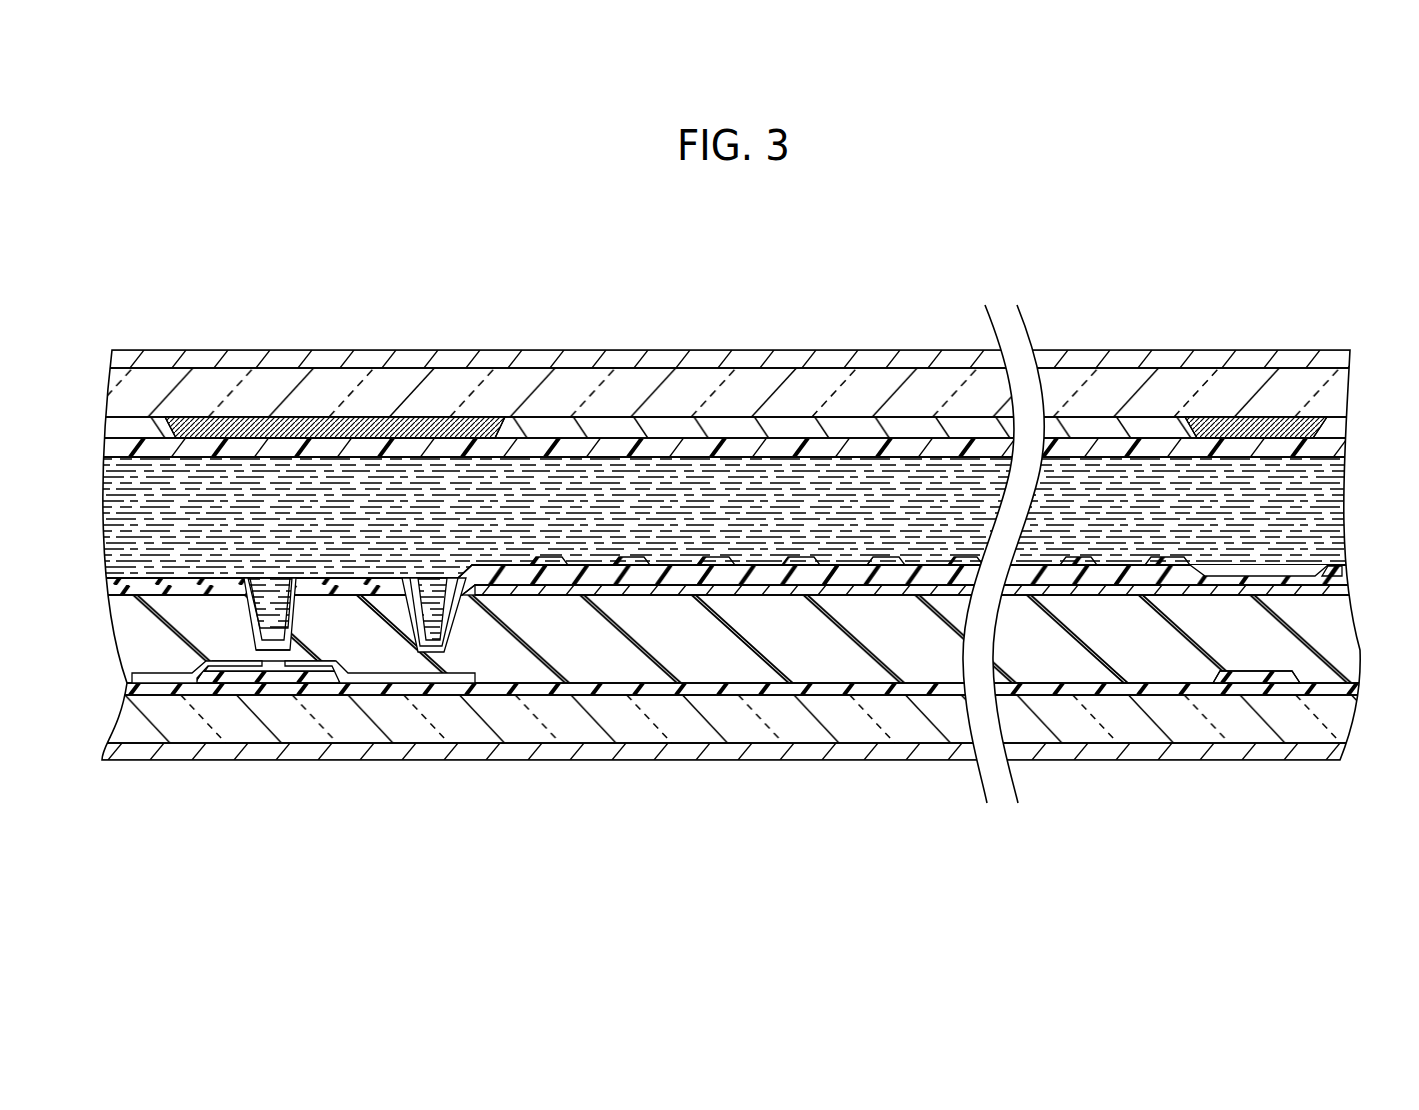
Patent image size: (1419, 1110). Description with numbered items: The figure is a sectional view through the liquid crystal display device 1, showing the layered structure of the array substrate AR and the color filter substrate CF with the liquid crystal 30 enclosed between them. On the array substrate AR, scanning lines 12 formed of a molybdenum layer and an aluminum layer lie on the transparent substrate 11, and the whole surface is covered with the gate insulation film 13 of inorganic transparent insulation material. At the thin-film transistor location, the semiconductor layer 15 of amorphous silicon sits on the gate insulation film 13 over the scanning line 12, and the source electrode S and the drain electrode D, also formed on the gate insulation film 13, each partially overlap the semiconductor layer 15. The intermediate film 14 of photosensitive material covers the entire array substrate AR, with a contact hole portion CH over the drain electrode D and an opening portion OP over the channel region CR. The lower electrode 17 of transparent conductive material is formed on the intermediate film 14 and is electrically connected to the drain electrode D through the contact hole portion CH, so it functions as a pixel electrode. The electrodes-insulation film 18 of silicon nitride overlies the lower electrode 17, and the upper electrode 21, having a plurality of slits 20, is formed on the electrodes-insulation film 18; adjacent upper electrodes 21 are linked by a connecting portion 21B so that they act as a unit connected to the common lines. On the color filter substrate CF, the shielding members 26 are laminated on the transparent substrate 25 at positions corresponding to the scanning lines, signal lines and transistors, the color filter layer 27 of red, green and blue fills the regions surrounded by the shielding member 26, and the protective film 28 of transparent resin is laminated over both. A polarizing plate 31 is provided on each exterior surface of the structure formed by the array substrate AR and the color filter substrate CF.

The liquid crystal display device 1 is at (728, 500).
The color filter substrate CF is at (917, 298).
The array substrate AR is at (499, 820).
The transparent substrate 11 is at (420, 720).
The scanning line 12 is at (285, 676).
The gate insulation film 13 is at (731, 690).
The intermediate film 14 is at (125, 640).
The semiconductor layer 15 is at (232, 664).
The lower electrode 17 is at (765, 592).
The electrodes-insulation film 18 is at (1345, 590).
The slit 20 is at (590, 558).
The upper electrode 21 is at (722, 560).
The connecting portion 21B is at (1338, 574).
The transparent substrate 25 is at (532, 390).
The shielding member 26 is at (326, 418).
The color filter layer 27 is at (815, 425).
The protective film 28 is at (616, 446).
The liquid crystal 30 is at (108, 498).
The polarizing plate 31 is at (740, 358).
The source electrode S is at (156, 678).
The drain electrode D is at (370, 678).
The channel region CR is at (262, 615).
The opening portion OP is at (288, 630).
The contact hole portion CH is at (426, 592).